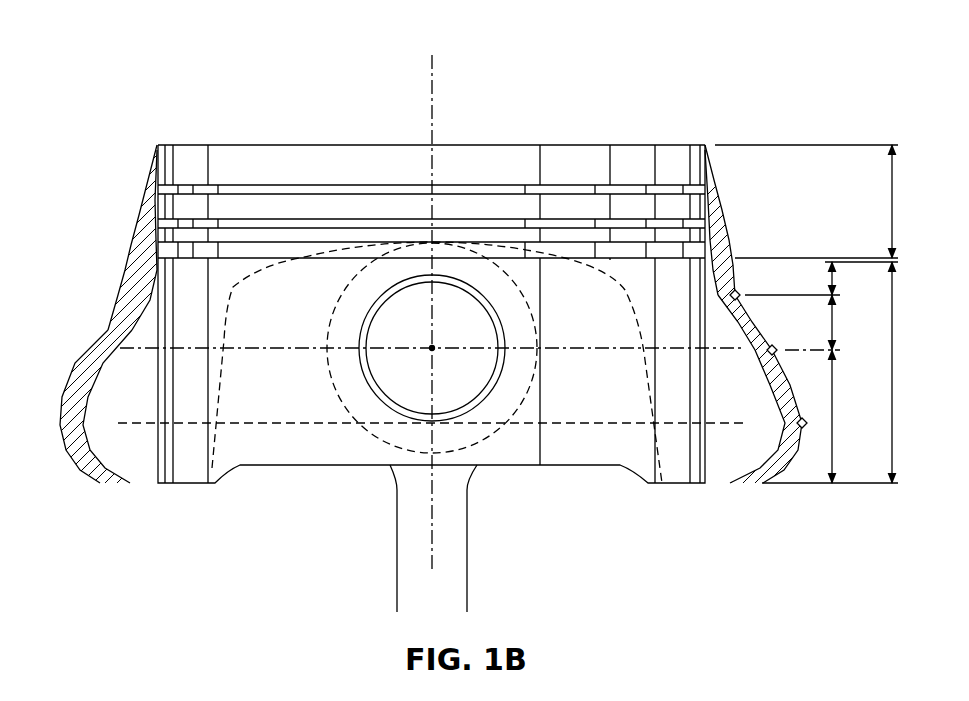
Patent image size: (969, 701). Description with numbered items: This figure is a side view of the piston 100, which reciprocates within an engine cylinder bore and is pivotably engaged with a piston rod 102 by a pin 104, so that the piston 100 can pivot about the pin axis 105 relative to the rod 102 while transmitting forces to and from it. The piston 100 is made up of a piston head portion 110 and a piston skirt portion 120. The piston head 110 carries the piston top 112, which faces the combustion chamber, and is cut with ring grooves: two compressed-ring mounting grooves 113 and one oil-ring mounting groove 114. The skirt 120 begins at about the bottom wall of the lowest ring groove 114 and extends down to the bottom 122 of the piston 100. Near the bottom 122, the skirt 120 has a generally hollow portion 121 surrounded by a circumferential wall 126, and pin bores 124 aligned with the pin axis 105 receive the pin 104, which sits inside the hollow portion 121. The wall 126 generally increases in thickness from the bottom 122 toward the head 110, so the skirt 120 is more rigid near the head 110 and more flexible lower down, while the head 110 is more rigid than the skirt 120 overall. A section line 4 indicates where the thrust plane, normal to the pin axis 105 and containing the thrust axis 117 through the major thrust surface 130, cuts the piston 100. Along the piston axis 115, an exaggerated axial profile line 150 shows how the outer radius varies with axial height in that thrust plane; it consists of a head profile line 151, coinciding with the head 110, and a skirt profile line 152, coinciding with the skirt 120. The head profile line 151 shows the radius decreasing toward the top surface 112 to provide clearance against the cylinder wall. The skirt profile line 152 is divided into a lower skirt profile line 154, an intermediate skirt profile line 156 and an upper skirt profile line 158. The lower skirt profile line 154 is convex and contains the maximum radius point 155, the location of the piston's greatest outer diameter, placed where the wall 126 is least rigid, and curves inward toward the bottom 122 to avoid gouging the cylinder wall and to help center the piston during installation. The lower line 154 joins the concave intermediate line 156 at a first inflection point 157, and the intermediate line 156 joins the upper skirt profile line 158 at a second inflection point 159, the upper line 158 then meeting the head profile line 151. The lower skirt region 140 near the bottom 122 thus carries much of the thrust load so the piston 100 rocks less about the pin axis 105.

The piston 100 is at (173, 47).
The piston rod 102 is at (396, 565).
The pin 104 is at (462, 392).
The pin axis 105 is at (432, 348).
The piston head portion 110 is at (888, 215).
The piston top 112 is at (308, 143).
The compressed-ring mounting grooves 113 is at (180, 188).
The oil-ring mounting groove 114 is at (180, 250).
The piston axis 115 is at (443, 98).
The thrust axis 117 is at (547, 348).
The piston skirt portion 120 is at (888, 425).
The hollow portion 121 is at (290, 410).
The bottom 122 is at (187, 486).
The pin bores 124 is at (480, 425).
The circumferential wall 126 is at (195, 340).
The major thrust surface 130 is at (707, 467).
The skirt lower end 140 is at (138, 468).
The axial profile line 150 is at (436, 368).
The head profile line 151 is at (106, 233).
The skirt profile line 152 is at (60, 390).
The lower skirt profile line 154 is at (867, 398).
The maximum radius point 155 is at (798, 426).
The intermediate skirt profile line 156 is at (833, 323).
The first inflection point 157 is at (775, 347).
The upper skirt profile line 158 is at (833, 273).
The second inflection point 159 is at (738, 292).
The section line 4- 4 is at (120, 423).